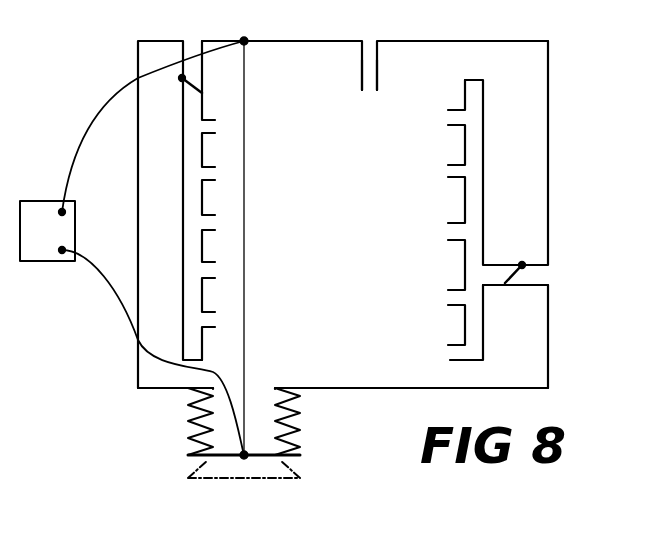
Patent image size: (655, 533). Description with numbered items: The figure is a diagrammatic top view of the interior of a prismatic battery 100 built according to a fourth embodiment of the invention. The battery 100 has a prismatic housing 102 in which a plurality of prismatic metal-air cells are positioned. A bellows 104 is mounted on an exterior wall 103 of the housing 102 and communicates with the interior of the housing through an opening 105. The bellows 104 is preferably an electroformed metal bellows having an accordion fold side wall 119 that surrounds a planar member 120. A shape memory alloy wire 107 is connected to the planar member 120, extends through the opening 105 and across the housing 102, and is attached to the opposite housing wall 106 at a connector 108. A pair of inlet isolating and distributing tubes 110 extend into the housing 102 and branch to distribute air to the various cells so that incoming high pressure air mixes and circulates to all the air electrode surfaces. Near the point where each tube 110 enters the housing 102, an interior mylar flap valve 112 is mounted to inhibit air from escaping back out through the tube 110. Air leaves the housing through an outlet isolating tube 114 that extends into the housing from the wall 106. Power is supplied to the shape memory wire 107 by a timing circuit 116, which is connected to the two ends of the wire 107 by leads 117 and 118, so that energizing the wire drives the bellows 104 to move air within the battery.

The prismatic battery 100 is at (110, 40).
The prismatic housing 102 is at (550, 160).
The exterior wall 103 is at (348, 390).
The bellows 104 is at (185, 440).
The opening 105 is at (253, 388).
The opposite housing wall 106 is at (312, 41).
The shape memory alloy wire 107 is at (245, 165).
The connector 108 is at (244, 40).
The inlet isolating and distributing tubes 110 is at (193, 55).
The mylar flap valve 112 is at (188, 82).
The outlet isolating tube 114 is at (368, 55).
The timing circuit 116 is at (50, 208).
The lead 117 is at (98, 118).
The lead 118 is at (110, 290).
The accordion fold side wall 119 is at (290, 437).
The planar member 120 is at (200, 460).